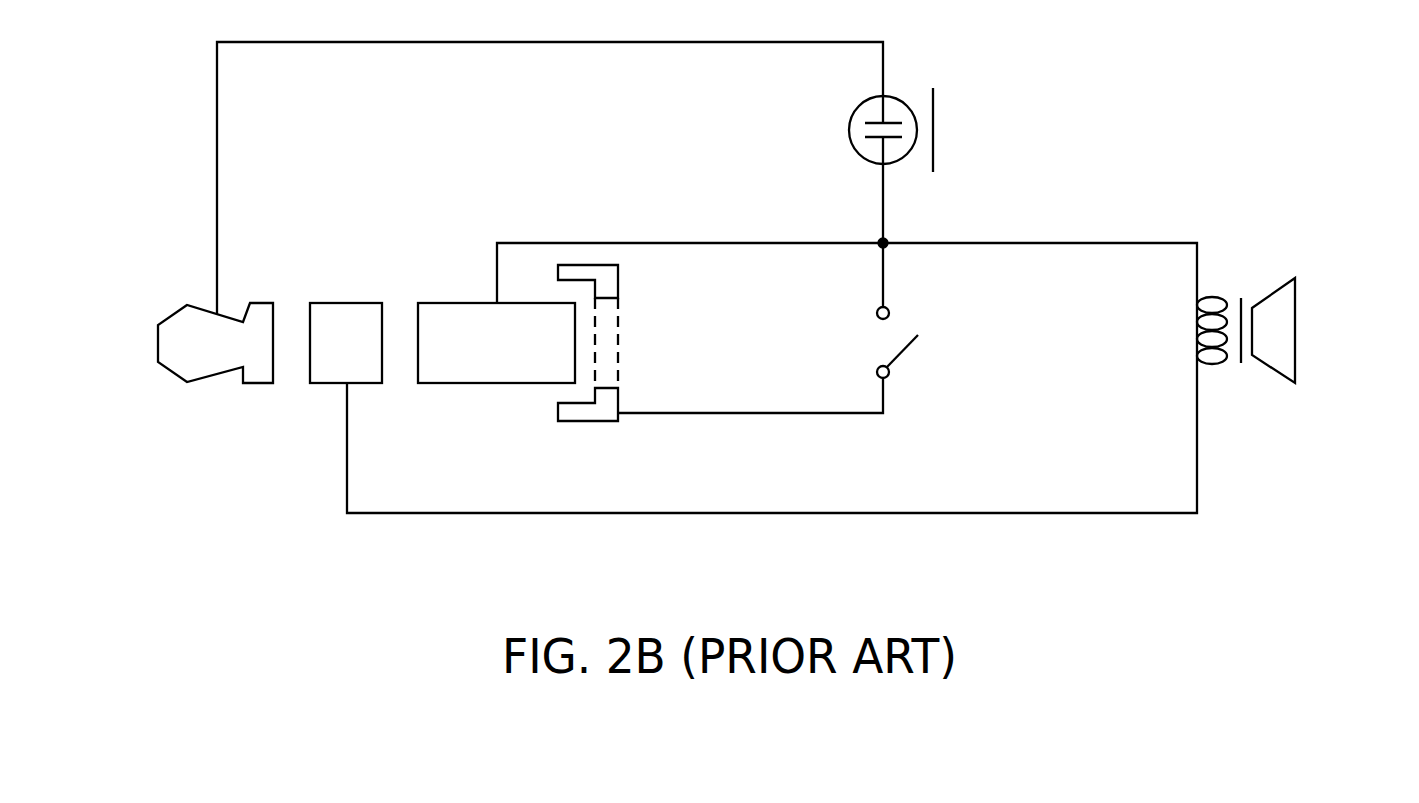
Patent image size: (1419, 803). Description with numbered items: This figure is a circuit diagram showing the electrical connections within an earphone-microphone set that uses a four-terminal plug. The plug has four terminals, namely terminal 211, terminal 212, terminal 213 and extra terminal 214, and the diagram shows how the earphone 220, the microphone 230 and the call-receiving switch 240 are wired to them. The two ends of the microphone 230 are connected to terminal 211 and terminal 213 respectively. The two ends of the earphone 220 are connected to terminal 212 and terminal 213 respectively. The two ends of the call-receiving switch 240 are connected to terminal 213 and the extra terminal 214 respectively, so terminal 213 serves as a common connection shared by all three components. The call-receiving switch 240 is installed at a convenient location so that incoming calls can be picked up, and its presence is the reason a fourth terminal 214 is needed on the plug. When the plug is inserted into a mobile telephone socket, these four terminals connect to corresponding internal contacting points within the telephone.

The terminal 211 is at (180, 308).
The terminal 212 is at (327, 383).
The terminal 213 is at (483, 383).
The extra terminal 214 is at (593, 421).
The earphone 220 is at (1297, 317).
The microphone 230 is at (937, 137).
The call-receiving switch 240 is at (907, 349).